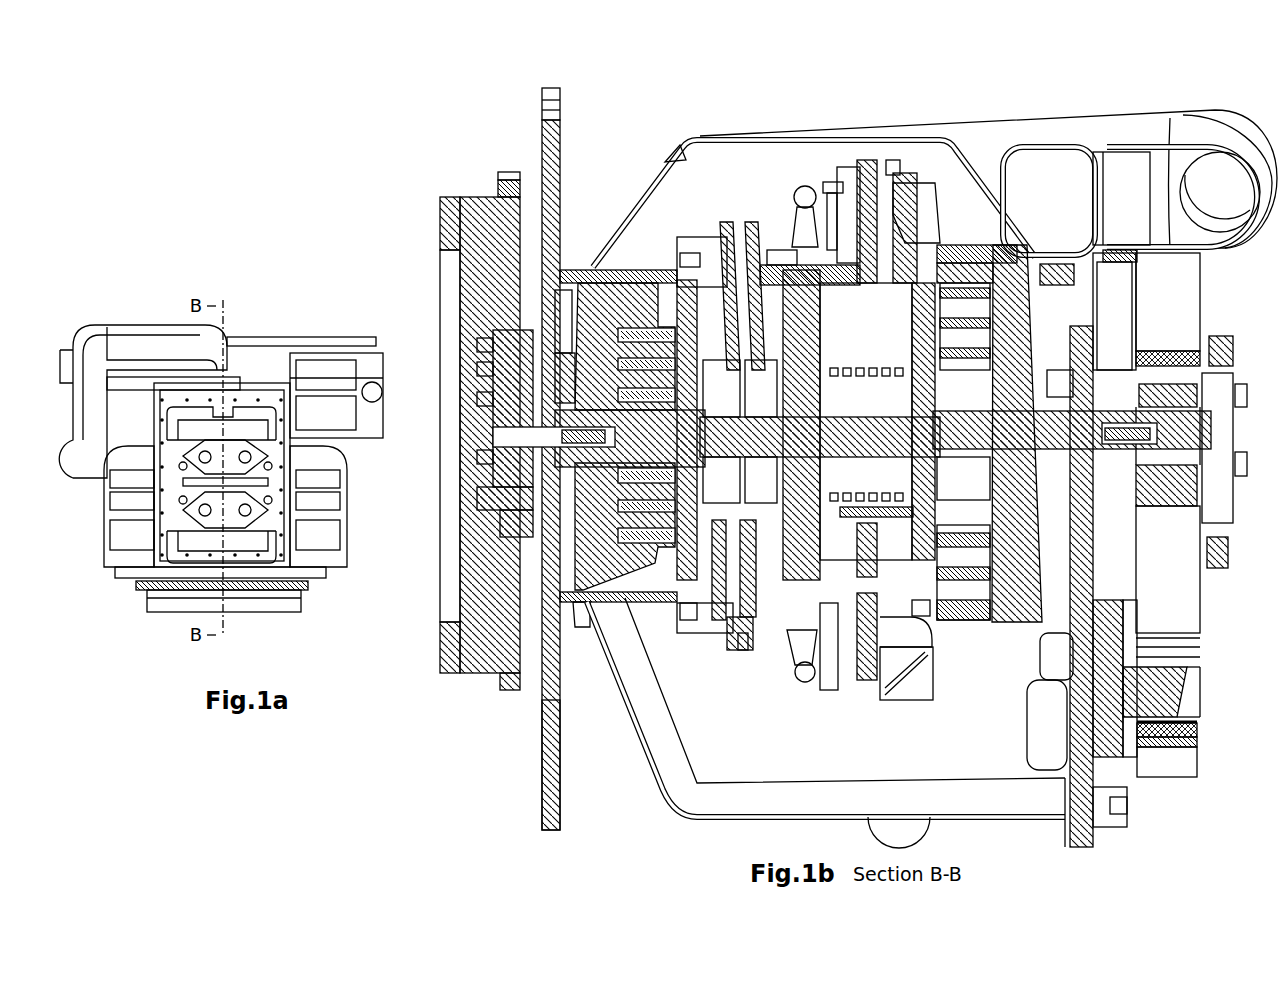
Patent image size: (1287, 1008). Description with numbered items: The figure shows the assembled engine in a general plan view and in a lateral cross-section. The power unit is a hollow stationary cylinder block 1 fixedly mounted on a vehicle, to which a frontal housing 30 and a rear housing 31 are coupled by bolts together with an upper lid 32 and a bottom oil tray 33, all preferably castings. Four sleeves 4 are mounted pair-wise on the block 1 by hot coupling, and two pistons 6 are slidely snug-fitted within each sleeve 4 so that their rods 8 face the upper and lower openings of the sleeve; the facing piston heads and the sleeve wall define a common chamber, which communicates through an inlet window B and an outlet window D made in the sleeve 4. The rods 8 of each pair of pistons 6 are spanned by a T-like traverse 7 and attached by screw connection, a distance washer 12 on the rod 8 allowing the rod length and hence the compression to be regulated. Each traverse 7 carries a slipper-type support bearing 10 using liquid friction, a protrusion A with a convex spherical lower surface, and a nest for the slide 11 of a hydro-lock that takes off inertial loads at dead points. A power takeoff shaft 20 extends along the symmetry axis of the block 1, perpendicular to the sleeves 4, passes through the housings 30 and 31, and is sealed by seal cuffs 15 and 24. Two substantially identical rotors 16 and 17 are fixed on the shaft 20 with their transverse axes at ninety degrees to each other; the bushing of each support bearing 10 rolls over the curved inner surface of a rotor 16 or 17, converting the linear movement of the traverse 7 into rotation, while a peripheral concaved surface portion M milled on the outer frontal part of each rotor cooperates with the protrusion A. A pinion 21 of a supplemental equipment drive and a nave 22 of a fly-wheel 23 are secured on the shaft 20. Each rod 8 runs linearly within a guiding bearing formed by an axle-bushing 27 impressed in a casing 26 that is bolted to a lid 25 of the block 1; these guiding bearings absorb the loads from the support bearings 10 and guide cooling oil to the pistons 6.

In FIG. 1B, the stationary cylinder block 1 is at (1100, 547).
In FIG. 1B, the sleeve 4 is at (777, 153).
In FIG. 1B, the piston 6 is at (793, 633).
In FIG. 1A, the T-like traverse 7 is at (165, 394).
In FIG. 1B, the T-like traverse 7 is at (952, 150).
In FIG. 1B, the rod 8 is at (893, 250).
In FIG. 1B, the support bearing 10 is at (1095, 213).
In FIG. 1B, the slide of a hydro-lock 11 is at (863, 165).
In FIG. 1B, the distance washer 12 is at (891, 116).
In FIG. 1B, the seal cuff 15 is at (418, 436).
In FIG. 1A, the rotor 16 is at (251, 358).
In FIG. 1B, the rotor 16 is at (1130, 357).
In FIG. 1A, the rotor 17 is at (250, 588).
In FIG. 1B, the rotor 17 is at (564, 170).
In FIG. 1B, the power takeoff shaft 20 is at (457, 373).
In FIG. 1B, the pinion of a supplemental equipment drive 21 is at (1197, 474).
In FIG. 1B, the nave of a fly-wheel 22 is at (379, 153).
In FIG. 1A, the fly-wheel 23 is at (203, 606).
In FIG. 1B, the fly-wheel 23 is at (334, 365).
In FIG. 1B, the seal cuff 24 is at (1190, 334).
In FIG. 1A, the lid 25 is at (201, 506).
In FIG. 1B, the casing 26 is at (767, 171).
In FIG. 1B, the axle-bushing 27 is at (814, 162).
In FIG. 1B, the frontal housing 30 is at (988, 156).
In FIG. 1B, the rear housing 31 is at (466, 770).
In FIG. 1B, the upper lid 32 is at (602, 443).
In FIG. 1B, the bottom oil tray 33 is at (781, 741).
In FIG. 1B, the protrusion A is at (1023, 265).
In FIG. 1B, the inlet window B is at (866, 391).
In FIG. 1B, the outlet window D is at (866, 478).
In FIG. 1B, the peripheral concaved surface portion M is at (627, 598).